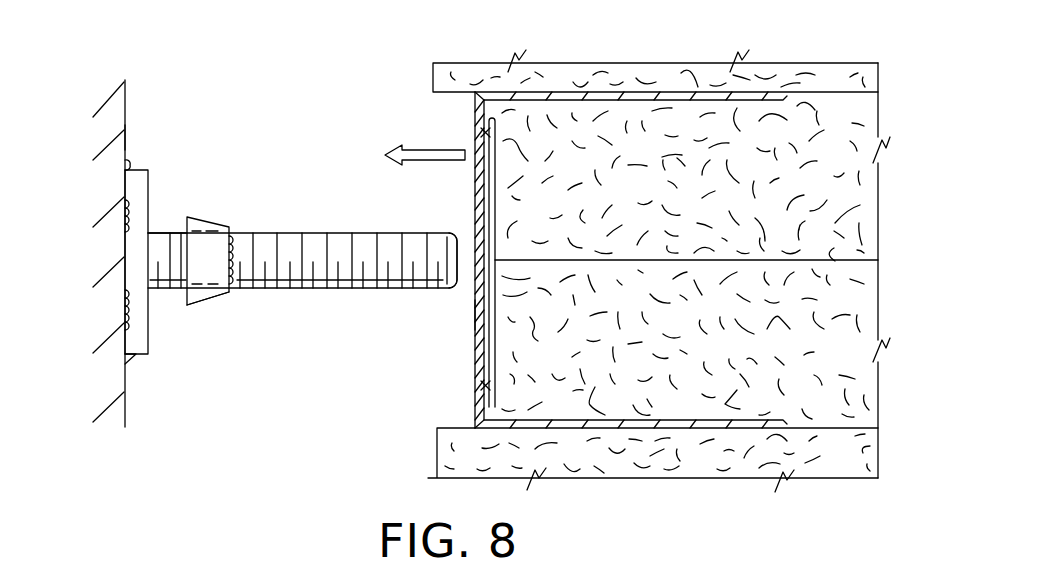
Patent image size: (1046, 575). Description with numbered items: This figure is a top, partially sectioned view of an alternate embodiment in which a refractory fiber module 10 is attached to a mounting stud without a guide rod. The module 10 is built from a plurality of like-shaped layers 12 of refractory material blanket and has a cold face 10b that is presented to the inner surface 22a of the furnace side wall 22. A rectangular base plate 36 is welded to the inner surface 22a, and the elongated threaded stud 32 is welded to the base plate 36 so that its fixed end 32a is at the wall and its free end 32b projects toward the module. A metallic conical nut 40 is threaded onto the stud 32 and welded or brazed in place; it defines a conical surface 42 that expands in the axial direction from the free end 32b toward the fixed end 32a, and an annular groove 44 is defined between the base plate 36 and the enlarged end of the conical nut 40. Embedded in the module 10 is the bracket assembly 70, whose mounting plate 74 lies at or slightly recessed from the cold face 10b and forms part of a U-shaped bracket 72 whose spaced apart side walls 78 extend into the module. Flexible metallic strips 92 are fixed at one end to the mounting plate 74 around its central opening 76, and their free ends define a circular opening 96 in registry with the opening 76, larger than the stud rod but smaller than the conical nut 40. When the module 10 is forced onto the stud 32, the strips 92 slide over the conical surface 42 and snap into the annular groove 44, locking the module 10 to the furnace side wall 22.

The refractory fiber module 10 is at (679, 50).
The cold face 10b is at (436, 453).
The layers of refractory material blanket 12 is at (830, 150).
The furnace side wall 22 is at (127, 102).
The inner surface 22a is at (126, 140).
The stud 32 is at (291, 226).
The fixed end 32a is at (155, 247).
The free end 32b is at (443, 286).
The base plate 36 is at (135, 278).
The conical nut 40 is at (210, 306).
The conical surface 42 is at (197, 230).
The annular groove 44 is at (170, 227).
The bracket assembly 70 is at (458, 107).
The U-shaped bracket 72 is at (558, 84).
The mounting plate 74 is at (481, 353).
The central opening 76 is at (480, 313).
The side walls 78 is at (628, 96).
The flexible fingers or strips 92 is at (482, 133).
The circular opening 96 is at (485, 236).